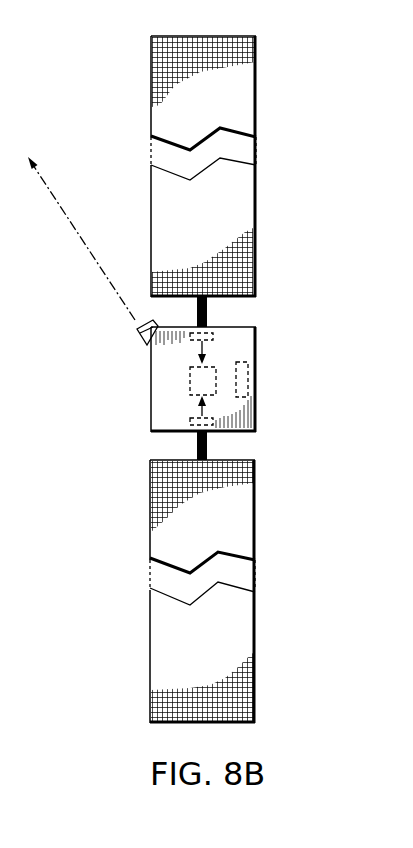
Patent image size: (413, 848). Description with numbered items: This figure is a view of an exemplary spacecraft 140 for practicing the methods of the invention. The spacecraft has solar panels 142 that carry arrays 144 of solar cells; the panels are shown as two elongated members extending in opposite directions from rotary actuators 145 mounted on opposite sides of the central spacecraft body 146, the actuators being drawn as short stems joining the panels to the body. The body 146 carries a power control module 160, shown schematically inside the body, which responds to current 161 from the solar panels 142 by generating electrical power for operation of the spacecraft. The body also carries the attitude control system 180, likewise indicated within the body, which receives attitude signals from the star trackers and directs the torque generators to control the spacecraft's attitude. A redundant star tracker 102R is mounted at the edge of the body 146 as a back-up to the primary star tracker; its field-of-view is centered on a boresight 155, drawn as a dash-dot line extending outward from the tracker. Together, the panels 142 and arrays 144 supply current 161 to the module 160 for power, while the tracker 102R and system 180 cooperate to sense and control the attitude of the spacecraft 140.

The spacecraft 140 is at (306, 274).
The solar panels 142 is at (257, 53).
The arrays of solar cells 144 is at (172, 103).
The rotary actuators 145 is at (214, 336).
The spacecraft body 146 is at (237, 417).
The boresight 155 is at (81, 238).
The power control module 160 is at (188, 382).
The current 161 is at (193, 410).
The attitude control system 180 is at (262, 342).
The redundant star tracker 102R is at (136, 328).